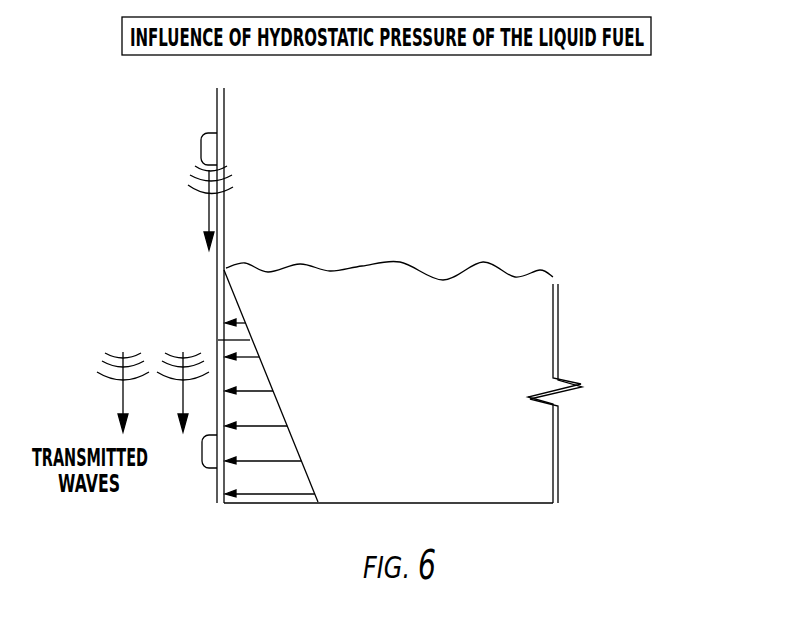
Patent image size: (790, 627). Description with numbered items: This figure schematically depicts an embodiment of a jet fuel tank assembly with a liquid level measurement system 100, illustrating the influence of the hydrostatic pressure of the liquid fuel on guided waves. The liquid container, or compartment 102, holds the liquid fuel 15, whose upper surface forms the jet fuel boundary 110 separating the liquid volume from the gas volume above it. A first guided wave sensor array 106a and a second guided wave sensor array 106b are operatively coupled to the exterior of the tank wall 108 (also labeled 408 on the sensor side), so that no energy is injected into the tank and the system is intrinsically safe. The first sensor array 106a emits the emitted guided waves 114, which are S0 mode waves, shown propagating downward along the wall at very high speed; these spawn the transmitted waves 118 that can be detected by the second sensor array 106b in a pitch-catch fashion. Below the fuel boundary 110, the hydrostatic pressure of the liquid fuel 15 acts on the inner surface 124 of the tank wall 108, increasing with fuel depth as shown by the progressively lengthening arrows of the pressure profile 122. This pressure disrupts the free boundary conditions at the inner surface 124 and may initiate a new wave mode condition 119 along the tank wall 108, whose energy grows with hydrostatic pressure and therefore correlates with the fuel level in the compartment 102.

The liquid level measurement system 100 is at (626, 175).
The liquid container 102 is at (432, 164).
The liquid fuel 15 is at (405, 386).
The first guided wave sensor array 106a is at (188, 138).
The second guided wave sensor array 106b is at (198, 452).
The tank wall 108 is at (558, 343).
The tank wall (sensor side) 408 is at (225, 128).
The jet fuel boundary 110 is at (226, 268).
The emitted guided waves 114 is at (192, 180).
The transmitted waves 118 is at (113, 380).
The new wave mode condition 119 is at (166, 365).
The hydrostatic pressure profile 122 is at (278, 373).
The inner surface of the tank wall 124 is at (250, 340).
The S0 guided wave mode S0 is at (232, 210).